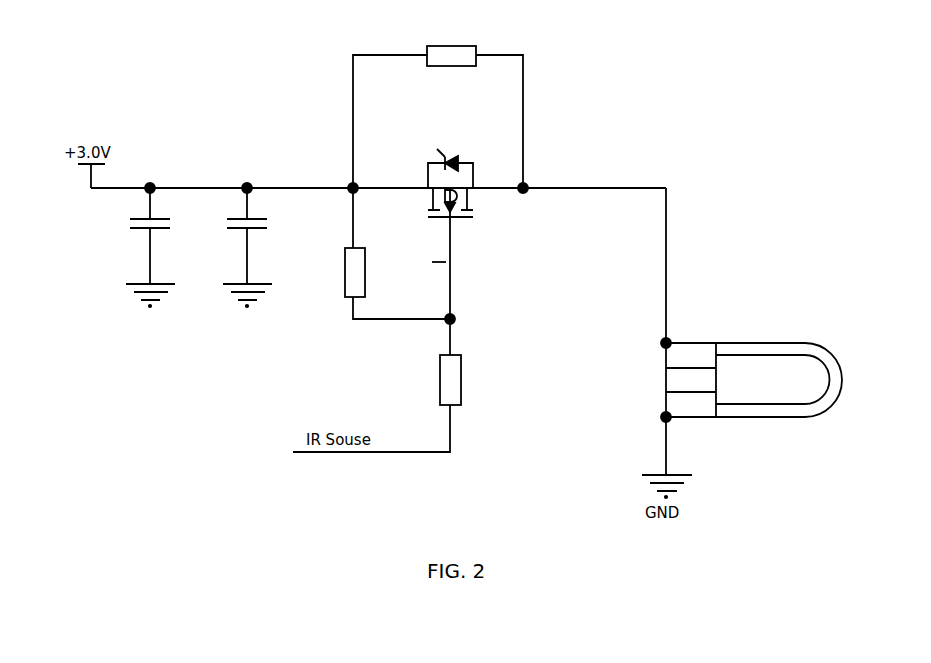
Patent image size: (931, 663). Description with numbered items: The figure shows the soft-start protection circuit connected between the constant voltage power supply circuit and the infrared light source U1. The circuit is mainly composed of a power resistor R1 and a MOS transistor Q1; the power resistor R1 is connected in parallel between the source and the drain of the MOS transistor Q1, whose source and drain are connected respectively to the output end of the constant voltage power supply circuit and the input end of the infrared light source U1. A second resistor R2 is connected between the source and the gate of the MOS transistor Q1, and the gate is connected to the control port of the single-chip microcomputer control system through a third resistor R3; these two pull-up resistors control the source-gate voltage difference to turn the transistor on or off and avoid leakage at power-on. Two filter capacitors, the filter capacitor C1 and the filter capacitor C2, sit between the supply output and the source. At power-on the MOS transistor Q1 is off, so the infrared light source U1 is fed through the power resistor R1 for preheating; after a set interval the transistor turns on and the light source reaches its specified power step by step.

The filter capacitor C1 is at (159, 260).
The filter capacitor C2 is at (256, 260).
The power resistor R1 is at (438, 106).
The second resistor R2 is at (397, 253).
The third resistor R3 is at (389, 403).
The MOS transistor Q1 is at (449, 224).
The infrared light source U1 is at (754, 381).